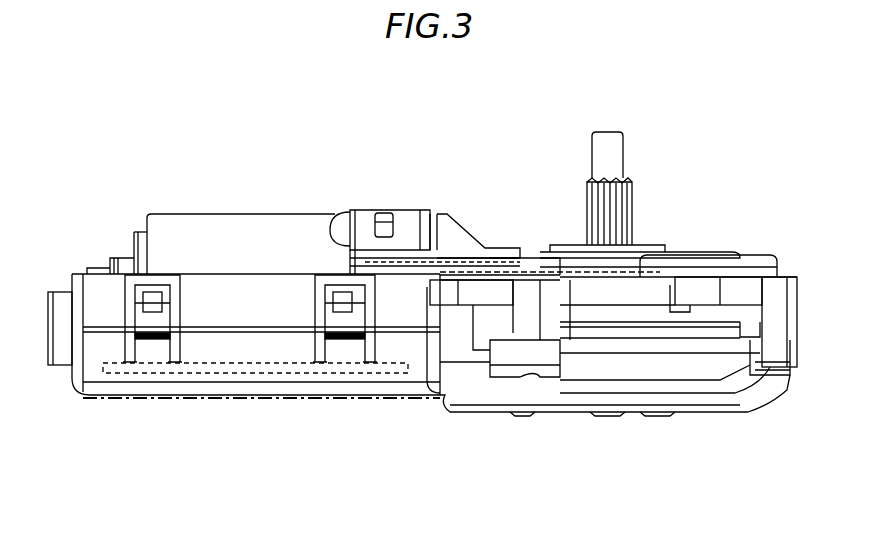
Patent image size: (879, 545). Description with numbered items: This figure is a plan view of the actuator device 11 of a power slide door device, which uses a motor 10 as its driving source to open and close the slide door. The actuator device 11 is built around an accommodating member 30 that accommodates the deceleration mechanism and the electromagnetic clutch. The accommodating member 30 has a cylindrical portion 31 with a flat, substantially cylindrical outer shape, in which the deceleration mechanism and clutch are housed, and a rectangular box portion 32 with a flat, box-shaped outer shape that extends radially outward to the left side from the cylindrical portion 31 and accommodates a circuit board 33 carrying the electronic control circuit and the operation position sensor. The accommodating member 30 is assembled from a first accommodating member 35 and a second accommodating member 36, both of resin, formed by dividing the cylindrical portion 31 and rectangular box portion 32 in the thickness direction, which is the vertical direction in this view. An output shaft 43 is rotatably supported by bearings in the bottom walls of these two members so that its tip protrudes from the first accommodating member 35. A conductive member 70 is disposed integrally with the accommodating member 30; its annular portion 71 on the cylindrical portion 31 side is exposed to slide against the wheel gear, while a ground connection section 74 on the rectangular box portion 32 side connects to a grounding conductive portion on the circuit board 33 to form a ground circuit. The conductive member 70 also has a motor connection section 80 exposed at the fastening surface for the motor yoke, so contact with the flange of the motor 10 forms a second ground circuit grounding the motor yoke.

The actuator device 11 is at (163, 113).
The motor 10 is at (205, 213).
The motor connection section 80 is at (355, 235).
The conductive member 70 is at (472, 262).
The output shaft 43 is at (625, 157).
The annular portion 71 is at (638, 262).
The first accommodating member 35 is at (710, 252).
The accommodating member 30 is at (797, 278).
The ground connection section 74 is at (345, 306).
The circuit board 33 is at (235, 380).
The rectangular box portion 32 is at (410, 396).
The cylindrical portion 31 is at (598, 405).
The second accommodating member 36 is at (700, 414).